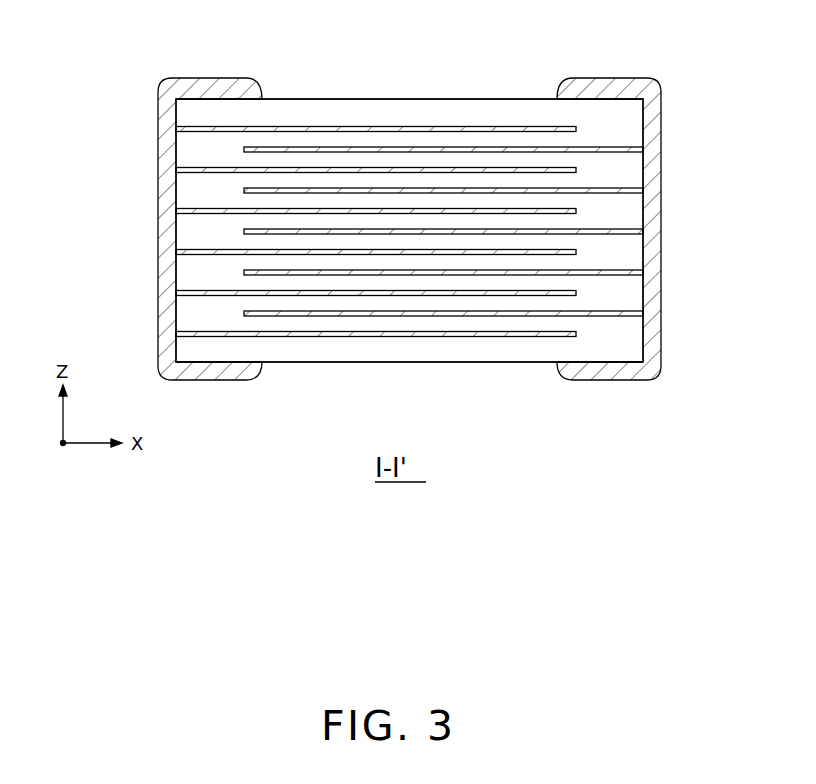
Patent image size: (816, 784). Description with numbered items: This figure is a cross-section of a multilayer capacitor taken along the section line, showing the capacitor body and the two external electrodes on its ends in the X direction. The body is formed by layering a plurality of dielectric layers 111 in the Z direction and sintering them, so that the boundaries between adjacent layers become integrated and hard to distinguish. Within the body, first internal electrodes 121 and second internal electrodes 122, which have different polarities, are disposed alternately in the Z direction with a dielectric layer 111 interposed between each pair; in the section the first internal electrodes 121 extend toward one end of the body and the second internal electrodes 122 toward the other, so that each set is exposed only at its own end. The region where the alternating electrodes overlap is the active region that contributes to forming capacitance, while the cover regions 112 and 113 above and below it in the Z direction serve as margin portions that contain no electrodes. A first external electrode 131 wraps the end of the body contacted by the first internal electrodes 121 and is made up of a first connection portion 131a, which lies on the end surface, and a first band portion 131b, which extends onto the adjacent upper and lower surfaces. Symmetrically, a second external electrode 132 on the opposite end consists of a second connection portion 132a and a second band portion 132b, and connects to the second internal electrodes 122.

The dielectric layer 111 is at (195, 192).
The cover region 112 is at (413, 108).
The cover region 113 is at (414, 353).
The first internal electrode 121 is at (325, 127).
The second internal electrode 122 is at (510, 148).
The first external electrode 131 is at (66, 100).
The first connection portion 131a is at (170, 168).
The first band portion 131b is at (213, 93).
The second external electrode 132 is at (753, 100).
The second connection portion 132a is at (652, 165).
The second band portion 132b is at (608, 88).